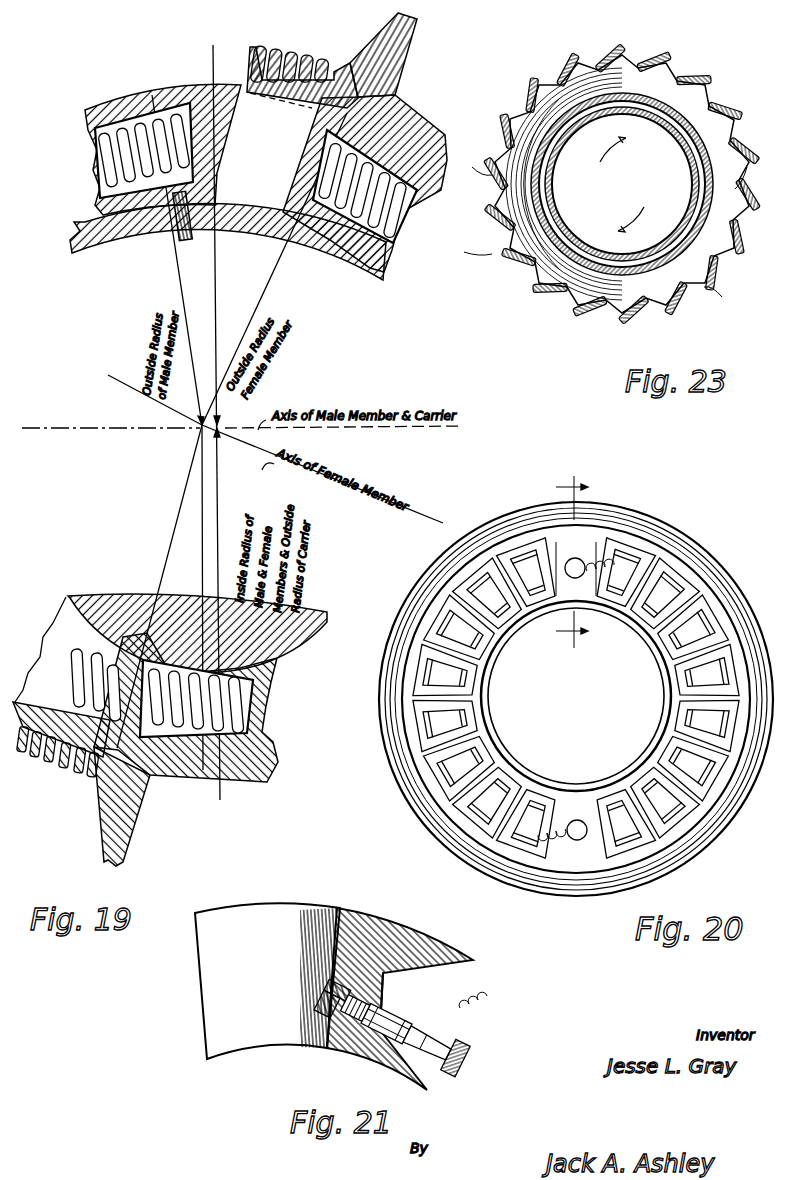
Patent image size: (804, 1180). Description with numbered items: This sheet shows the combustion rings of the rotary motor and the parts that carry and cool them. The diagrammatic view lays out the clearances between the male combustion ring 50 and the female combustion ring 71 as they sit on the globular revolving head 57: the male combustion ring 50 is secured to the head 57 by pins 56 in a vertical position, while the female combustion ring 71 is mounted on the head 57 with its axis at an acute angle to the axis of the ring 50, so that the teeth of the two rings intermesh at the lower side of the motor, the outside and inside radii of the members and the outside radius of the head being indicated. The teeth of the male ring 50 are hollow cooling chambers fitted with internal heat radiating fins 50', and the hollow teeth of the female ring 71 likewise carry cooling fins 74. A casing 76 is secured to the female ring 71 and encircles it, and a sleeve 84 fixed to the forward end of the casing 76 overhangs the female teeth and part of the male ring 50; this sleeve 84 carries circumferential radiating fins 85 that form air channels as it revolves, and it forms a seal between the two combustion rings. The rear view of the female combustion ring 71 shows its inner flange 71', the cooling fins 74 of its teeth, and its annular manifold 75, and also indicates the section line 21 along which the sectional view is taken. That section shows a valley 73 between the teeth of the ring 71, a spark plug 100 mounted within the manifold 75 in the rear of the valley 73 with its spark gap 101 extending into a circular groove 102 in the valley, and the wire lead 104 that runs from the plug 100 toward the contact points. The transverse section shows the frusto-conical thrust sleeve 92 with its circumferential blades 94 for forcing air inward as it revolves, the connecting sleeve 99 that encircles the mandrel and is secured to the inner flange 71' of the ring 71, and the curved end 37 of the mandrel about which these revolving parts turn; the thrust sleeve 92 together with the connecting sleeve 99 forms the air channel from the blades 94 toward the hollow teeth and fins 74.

In FIG. 19, the male combustion ring 50 is at (163, 139).
In FIG. 19, the internal heat radiating fins 50' is at (117, 150).
In FIG. 19, the pins 56 is at (176, 274).
In FIG. 19, the globular revolving head 57 is at (244, 214).
In FIG. 19, the female combustion ring 71 is at (271, 438).
In FIG. 20, the female combustion ring 71 is at (576, 699).
In FIG. 21, the female combustion ring 71 is at (400, 988).
In FIG. 20, the inner flange 71' is at (571, 696).
In FIG. 19, the cooling fins 74 is at (395, 222).
In FIG. 20, the cooling fins 74 is at (469, 768).
In FIG. 20, the annular manifold 75 is at (636, 538).
In FIG. 21, the annular manifold 75 is at (410, 970).
In FIG. 19, the casing 76 is at (401, 70).
In FIG. 19, the sleeve 84 is at (250, 62).
In FIG. 19, the radiating fins 85 is at (292, 55).
In FIG. 21, the valleys 73 is at (314, 912).
In FIG. 20, the spark plugs 100 is at (572, 581).
In FIG. 21, the spark plugs 100 is at (429, 1019).
In FIG. 21, the spark gaps 101 is at (323, 1010).
In FIG. 21, the circular grooves 102 is at (324, 987).
In FIG. 21, the wire leads 104 is at (488, 1000).
In FIG. 20, the line 21— 21 is at (585, 562).
In FIG. 23, the curved end of the mandrel 37 is at (680, 153).
In FIG. 23, the connecting sleeve 99 is at (704, 187).
In FIG. 23, the thrust sleeve 92 is at (736, 129).
In FIG. 23, the blades 94 is at (664, 74).